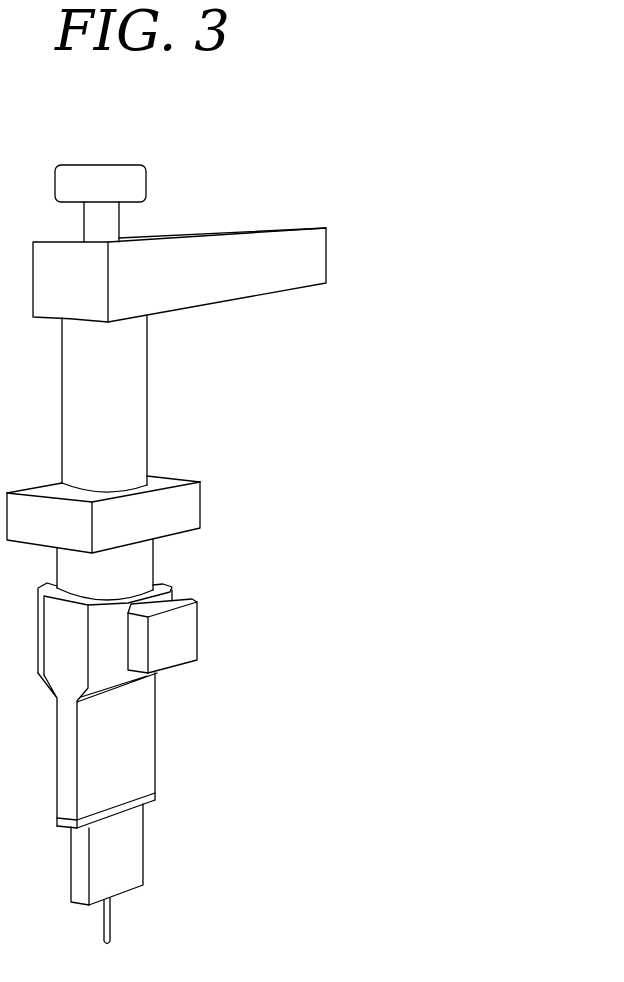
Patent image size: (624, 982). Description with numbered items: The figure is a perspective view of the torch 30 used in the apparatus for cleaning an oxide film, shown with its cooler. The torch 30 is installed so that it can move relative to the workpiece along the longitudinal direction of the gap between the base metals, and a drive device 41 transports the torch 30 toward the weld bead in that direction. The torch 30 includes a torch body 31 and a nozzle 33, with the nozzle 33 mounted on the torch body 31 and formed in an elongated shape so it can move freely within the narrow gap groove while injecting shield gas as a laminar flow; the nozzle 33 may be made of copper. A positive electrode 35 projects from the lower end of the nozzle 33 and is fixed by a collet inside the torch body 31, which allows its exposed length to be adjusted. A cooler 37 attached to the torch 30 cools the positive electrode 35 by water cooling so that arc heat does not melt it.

The torch 30 is at (240, 160).
The torch body 31 is at (148, 402).
The drive device 41 is at (192, 509).
The cooler 37 is at (178, 634).
The nozzle 33 is at (132, 839).
The positive electrode 35 is at (113, 928).